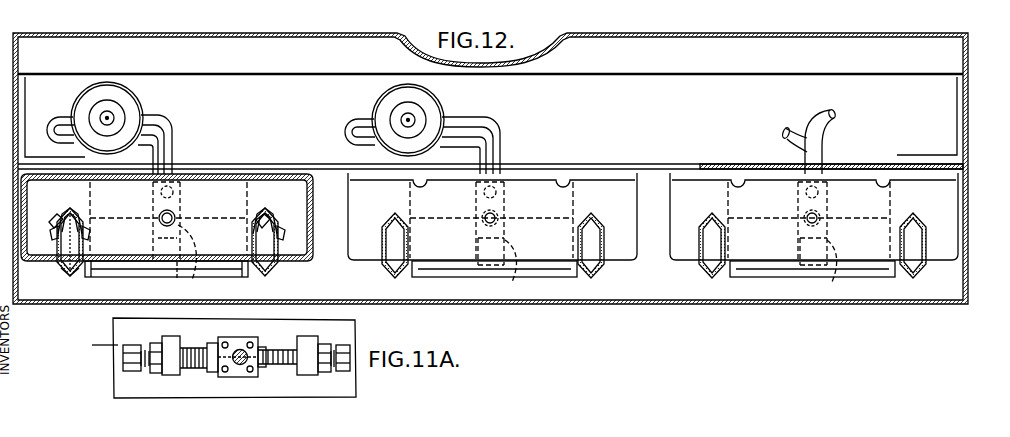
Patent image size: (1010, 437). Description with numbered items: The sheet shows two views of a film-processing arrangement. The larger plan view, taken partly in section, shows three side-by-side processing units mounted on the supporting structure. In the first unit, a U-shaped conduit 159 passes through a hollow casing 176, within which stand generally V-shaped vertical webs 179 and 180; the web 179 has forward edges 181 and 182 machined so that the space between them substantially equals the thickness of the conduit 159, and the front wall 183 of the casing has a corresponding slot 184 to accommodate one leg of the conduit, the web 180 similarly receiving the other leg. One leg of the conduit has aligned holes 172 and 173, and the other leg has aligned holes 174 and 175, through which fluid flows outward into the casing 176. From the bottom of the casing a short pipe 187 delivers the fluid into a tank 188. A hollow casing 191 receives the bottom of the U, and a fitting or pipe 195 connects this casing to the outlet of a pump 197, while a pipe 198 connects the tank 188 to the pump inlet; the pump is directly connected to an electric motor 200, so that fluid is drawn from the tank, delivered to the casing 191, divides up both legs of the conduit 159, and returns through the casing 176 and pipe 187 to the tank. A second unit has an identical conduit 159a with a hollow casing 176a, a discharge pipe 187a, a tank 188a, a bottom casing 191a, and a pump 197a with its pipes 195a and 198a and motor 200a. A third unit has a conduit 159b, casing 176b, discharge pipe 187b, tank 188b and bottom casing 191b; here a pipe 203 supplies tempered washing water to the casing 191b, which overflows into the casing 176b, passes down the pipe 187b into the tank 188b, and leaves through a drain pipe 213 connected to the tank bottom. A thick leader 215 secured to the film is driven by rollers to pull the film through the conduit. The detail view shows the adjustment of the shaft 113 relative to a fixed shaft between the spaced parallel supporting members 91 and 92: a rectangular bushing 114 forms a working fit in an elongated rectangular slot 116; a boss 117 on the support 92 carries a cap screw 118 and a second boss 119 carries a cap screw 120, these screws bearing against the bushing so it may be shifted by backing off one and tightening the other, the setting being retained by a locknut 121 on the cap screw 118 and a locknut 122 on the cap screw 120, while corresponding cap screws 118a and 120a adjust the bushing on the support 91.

In FIG. 12, the electric motor 200 is at (127, 104).
In FIG. 12, the fitting or pipe 195 is at (58, 122).
In FIG. 12, the pump 197 is at (148, 112).
In FIG. 12, the pipe 198 is at (172, 129).
In FIG. 12, the short pipe 187 is at (170, 216).
In FIG. 12, the hole 172 is at (36, 258).
In FIG. 12, the hole 173 is at (86, 248).
In FIG. 12, the hole 174 is at (250, 247).
In FIG. 12, the hollow casing 191 is at (176, 270).
In FIG. 12, the tank 188 is at (230, 270).
In FIG. 12, the U-shaped conduit 159 is at (68, 278).
In FIG. 12, the front wall 183 is at (66, 272).
In FIG. 12, the slot 184 is at (82, 270).
In FIG. 12, the web 179 is at (70, 208).
In FIG. 12, the forward edge 181 is at (57, 239).
In FIG. 12, the forward edge 182 is at (87, 240).
In FIG. 12, the thick leader 215 is at (56, 220).
In FIG. 12, the hollow casing 176 is at (291, 270).
In FIG. 12, the web 180 is at (268, 210).
In FIG. 12, the hole 175 is at (279, 240).
In FIG. 12, the circular knob 200a is at (430, 111).
In FIG. 12, the bracket 195a is at (358, 120).
In FIG. 12, the pump 197a is at (436, 97).
In FIG. 12, the inner conduit 198a is at (482, 123).
In FIG. 12, the hollow casing 176a is at (618, 260).
In FIG. 12, the second U-shaped conduit 159a is at (383, 250).
In FIG. 12, the discharge pipe 187a is at (503, 215).
In FIG. 12, the hollow casing 191a is at (487, 270).
In FIG. 12, the tank 188a is at (443, 268).
In FIG. 12, the pipe 213 is at (834, 112).
In FIG. 12, the pipe 203 is at (787, 128).
In FIG. 12, the supporting member 91 is at (866, 160).
In FIG. 12, the discharge pipe 187b is at (825, 215).
In FIG. 12, the third U-shaped conduit 159b is at (700, 250).
In FIG. 12, the hollow casing 176b is at (936, 268).
In FIG. 12, the hollow casing 191b is at (817, 268).
In FIG. 12, the tank 188b is at (762, 268).
In FIG. 11A, the supporting member 92 is at (363, 323).
In FIG. 11A, the cap screw 120 is at (133, 344).
In FIG. 11A, the locknut 122 is at (157, 374).
In FIG. 11A, the second boss 119 is at (172, 337).
In FIG. 11A, the cap screw 120a is at (194, 370).
In FIG. 11A, the bushing 114 is at (254, 340).
In FIG. 11A, the shaft 113 is at (238, 350).
In FIG. 11A, the elongated rectangular slot 116 is at (267, 370).
In FIG. 11A, the cap screw 118a is at (296, 339).
In FIG. 11A, the boss 117 is at (313, 346).
In FIG. 11A, the locknut 121 is at (324, 373).
In FIG. 11A, the cap screw 118 is at (346, 374).